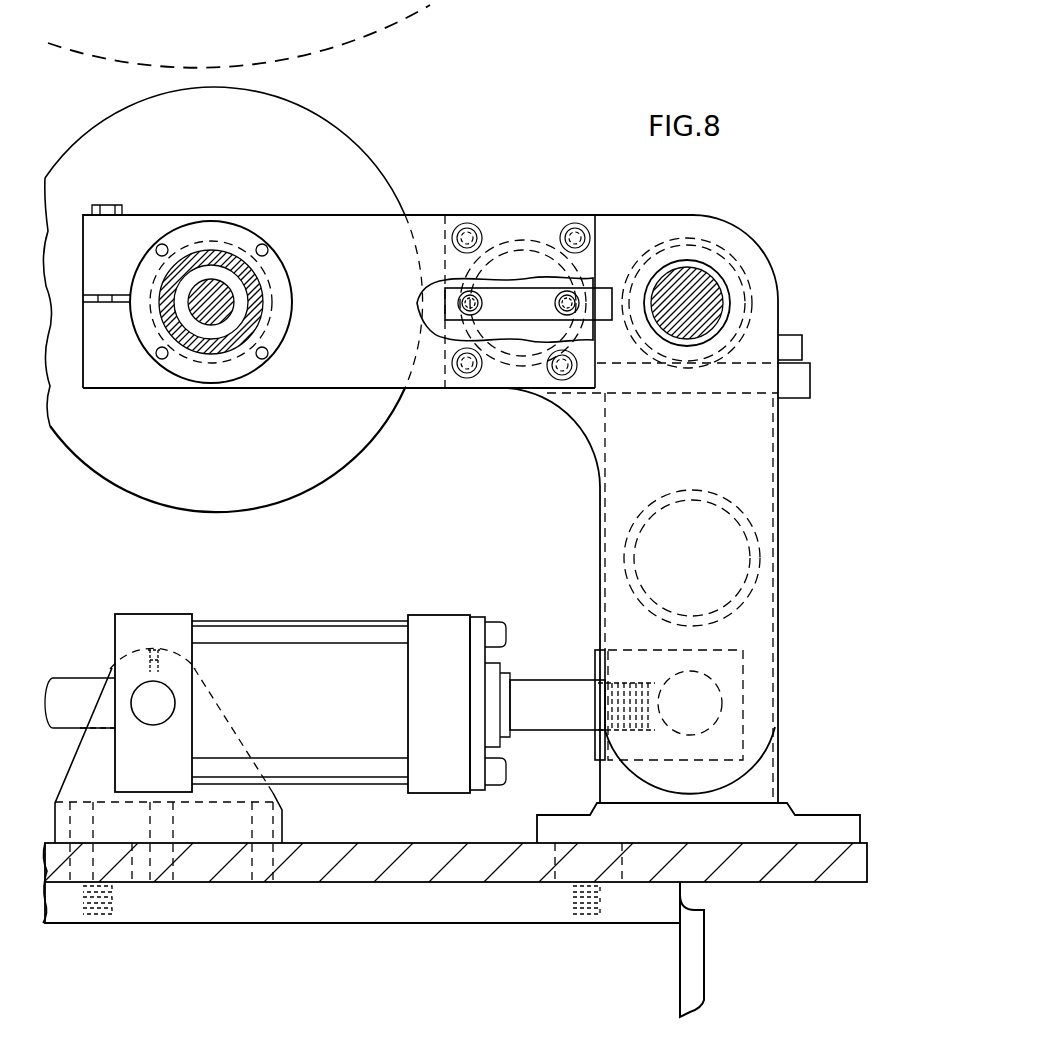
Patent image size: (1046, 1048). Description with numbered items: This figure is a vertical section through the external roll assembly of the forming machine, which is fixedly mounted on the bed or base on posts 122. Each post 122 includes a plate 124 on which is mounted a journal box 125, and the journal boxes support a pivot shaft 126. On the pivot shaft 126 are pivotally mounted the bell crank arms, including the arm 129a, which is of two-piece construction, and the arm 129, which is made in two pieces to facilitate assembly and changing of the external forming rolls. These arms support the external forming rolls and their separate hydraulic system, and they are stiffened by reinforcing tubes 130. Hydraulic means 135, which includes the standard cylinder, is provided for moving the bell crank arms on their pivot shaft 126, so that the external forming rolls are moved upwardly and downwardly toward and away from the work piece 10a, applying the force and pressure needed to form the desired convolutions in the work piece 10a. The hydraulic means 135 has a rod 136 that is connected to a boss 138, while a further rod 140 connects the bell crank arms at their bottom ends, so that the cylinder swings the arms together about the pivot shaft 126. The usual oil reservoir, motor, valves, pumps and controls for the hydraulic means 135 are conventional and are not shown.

The work piece 10a is at (418, 22).
The post 122 is at (762, 780).
The plate 124 is at (812, 395).
The journal box 125 is at (797, 333).
The pivot shaft 126 is at (697, 290).
The bell crank arm 129 is at (634, 205).
The bell crank arm 129a is at (428, 213).
The reinforcing tube 130 is at (520, 238).
The hydraulic means 135 is at (337, 662).
The rod 136 is at (550, 693).
The boss 138 is at (743, 656).
The rod 140 is at (710, 707).